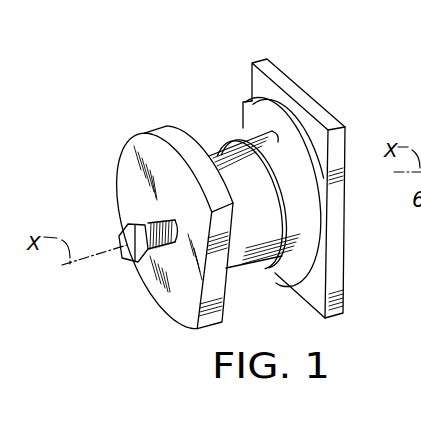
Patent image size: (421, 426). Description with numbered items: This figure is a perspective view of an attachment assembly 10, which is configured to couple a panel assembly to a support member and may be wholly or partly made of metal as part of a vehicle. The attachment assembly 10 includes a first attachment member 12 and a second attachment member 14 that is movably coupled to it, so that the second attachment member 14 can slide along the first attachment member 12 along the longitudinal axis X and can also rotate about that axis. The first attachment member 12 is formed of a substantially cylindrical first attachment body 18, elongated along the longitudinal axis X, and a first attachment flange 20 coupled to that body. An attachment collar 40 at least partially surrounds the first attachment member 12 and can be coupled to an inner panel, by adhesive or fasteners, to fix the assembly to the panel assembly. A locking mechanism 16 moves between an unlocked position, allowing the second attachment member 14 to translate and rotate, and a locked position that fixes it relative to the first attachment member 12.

The attachment assembly 10 is at (235, 136).
The first attachment member 12 is at (142, 130).
The second attachment member 14 is at (290, 75).
The locking mechanism 16 is at (119, 239).
The first attachment body 18 is at (210, 157).
The first attachment flange 20 is at (182, 301).
The attachment collar 40 is at (278, 150).